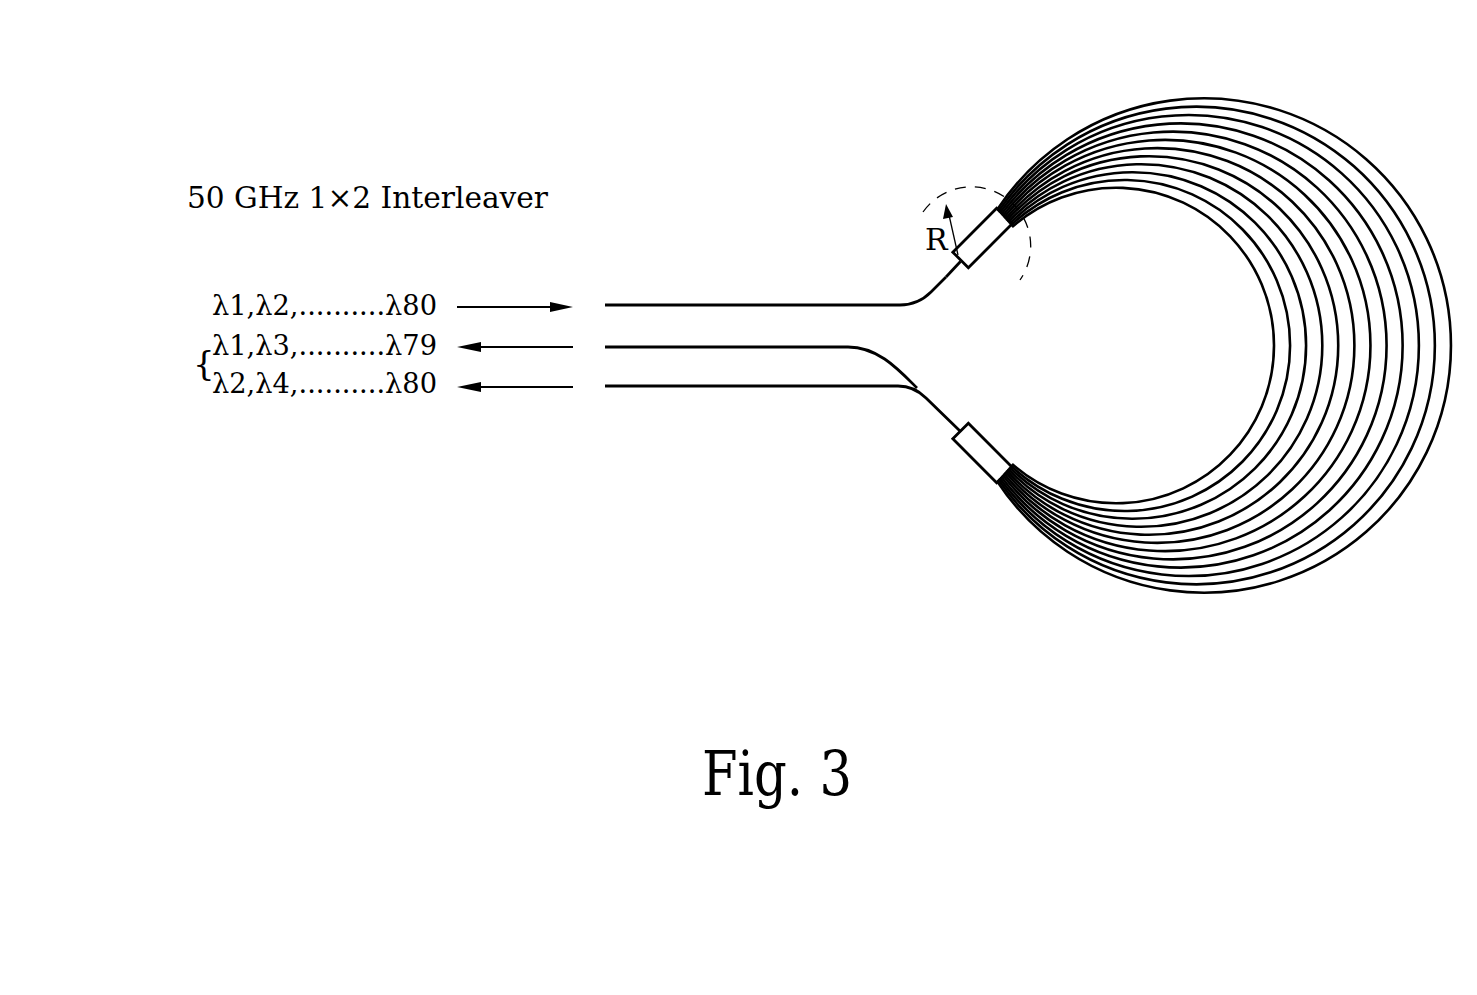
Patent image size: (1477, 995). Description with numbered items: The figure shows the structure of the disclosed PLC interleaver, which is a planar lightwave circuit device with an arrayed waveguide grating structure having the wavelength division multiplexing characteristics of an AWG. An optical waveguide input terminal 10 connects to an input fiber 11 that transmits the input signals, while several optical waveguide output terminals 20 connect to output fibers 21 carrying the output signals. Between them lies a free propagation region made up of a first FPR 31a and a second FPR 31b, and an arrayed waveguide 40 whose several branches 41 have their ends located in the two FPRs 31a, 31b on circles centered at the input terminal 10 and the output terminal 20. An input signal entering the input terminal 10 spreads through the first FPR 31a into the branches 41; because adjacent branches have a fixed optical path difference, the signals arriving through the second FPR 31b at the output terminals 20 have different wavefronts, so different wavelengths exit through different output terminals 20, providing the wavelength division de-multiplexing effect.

The optical waveguide input terminal 10 is at (930, 286).
The input fiber 11 is at (727, 304).
The optical waveguide output terminal 20 is at (877, 350).
The output fiber 21 is at (742, 387).
The first free propagation region 31a is at (990, 242).
The second free propagation region 31b is at (987, 453).
The arrayed waveguide 40 is at (1294, 96).
The branch 41 is at (1390, 183).